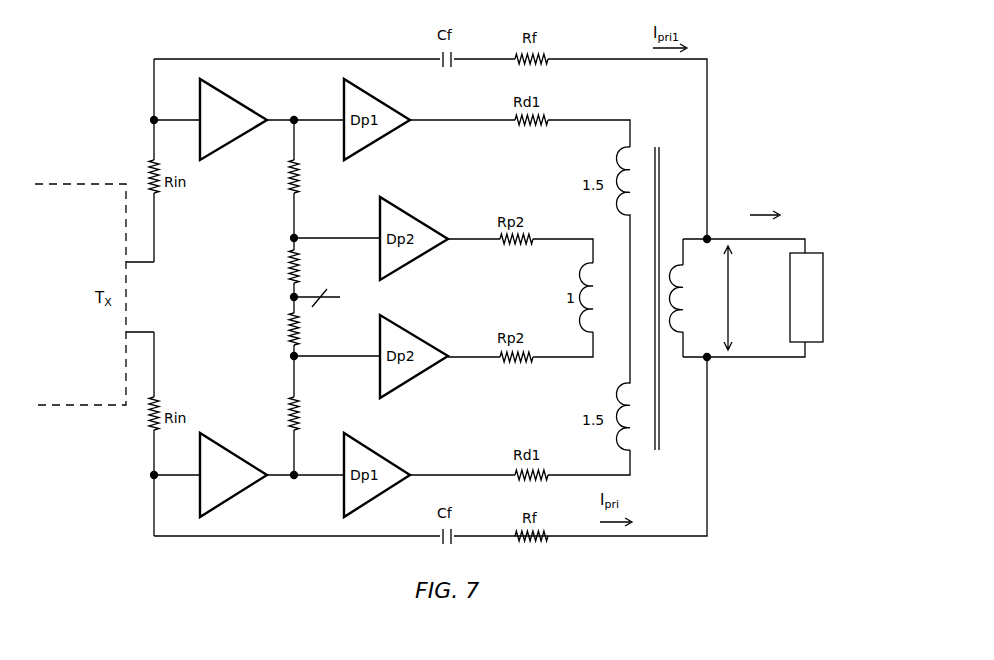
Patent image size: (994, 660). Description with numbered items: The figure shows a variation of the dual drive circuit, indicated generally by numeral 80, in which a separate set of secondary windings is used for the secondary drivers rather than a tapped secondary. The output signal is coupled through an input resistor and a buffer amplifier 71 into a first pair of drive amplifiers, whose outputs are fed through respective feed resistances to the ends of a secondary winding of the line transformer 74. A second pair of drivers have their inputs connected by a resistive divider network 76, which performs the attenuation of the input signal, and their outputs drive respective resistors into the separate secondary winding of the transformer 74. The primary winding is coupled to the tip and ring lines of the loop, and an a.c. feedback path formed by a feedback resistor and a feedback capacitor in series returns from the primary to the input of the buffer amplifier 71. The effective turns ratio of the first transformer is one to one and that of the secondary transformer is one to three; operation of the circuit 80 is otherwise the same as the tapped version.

The buffer amplifier 71 is at (230, 142).
The transformer core 74 is at (660, 432).
The resistor network 76 is at (262, 307).
The circuit 80 is at (782, 530).